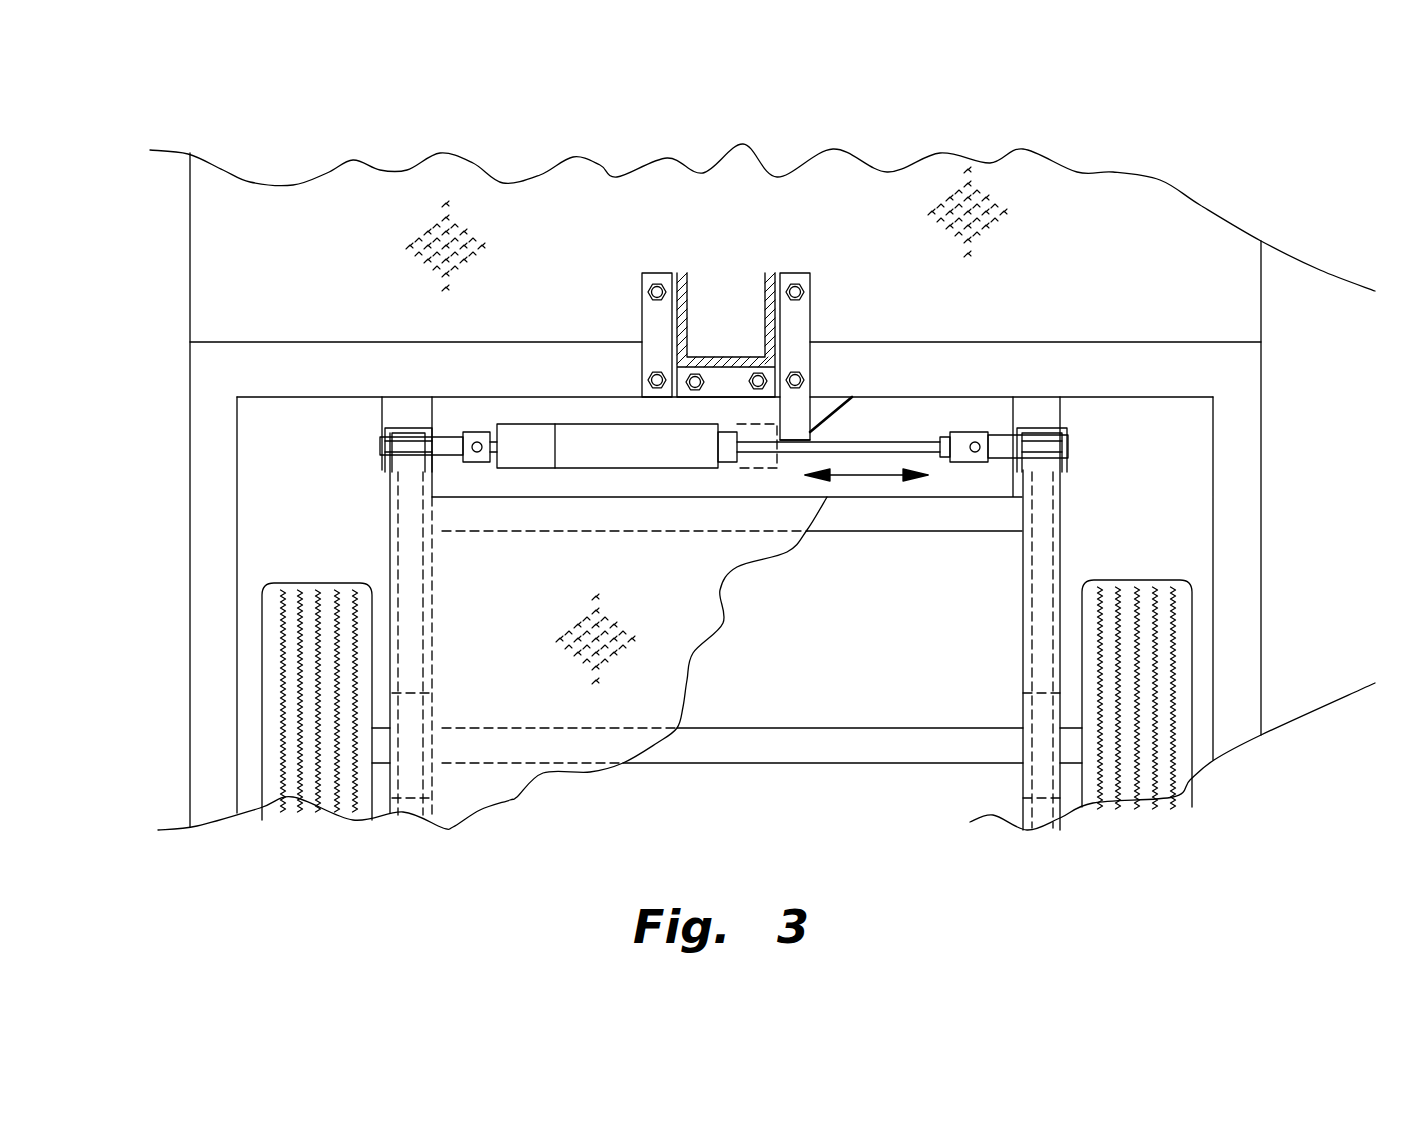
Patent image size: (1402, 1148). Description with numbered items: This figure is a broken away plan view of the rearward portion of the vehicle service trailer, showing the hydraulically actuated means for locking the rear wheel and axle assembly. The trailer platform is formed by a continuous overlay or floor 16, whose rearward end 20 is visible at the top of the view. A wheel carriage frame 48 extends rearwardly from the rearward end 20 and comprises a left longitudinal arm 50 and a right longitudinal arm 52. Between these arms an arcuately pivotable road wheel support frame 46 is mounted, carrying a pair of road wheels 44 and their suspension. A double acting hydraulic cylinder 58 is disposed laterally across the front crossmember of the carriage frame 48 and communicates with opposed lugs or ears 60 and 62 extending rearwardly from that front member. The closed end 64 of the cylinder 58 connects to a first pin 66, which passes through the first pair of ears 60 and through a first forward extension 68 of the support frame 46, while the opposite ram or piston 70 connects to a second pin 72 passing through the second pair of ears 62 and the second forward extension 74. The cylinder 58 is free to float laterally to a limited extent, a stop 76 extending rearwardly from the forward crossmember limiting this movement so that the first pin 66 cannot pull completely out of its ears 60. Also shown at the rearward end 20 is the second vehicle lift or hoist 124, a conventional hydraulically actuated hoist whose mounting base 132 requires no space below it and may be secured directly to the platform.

The floor 16 is at (1141, 263).
The rearward end 20 is at (285, 341).
The road wheels 44 is at (287, 584).
The road wheel support frame 46 is at (1023, 605).
The wheel carriage frame 48 is at (543, 353).
The left longitudinal arm 50 is at (192, 601).
The right longitudinal arm 52 is at (1262, 463).
The double acting hydraulic cylinder 58 is at (637, 457).
The first pair of ears 60 is at (383, 462).
The second pair of ears 62 is at (1022, 467).
The closed end 64 is at (505, 423).
The first pin 66 is at (413, 455).
The first forward extension 68 is at (390, 485).
The ram or piston 70 is at (880, 440).
The pin 72 is at (1037, 428).
The second forward extension 74 is at (1055, 430).
The stop 76 is at (813, 411).
The second vehicle lift or hoist 124 is at (735, 272).
The mounting base 132 is at (641, 293).